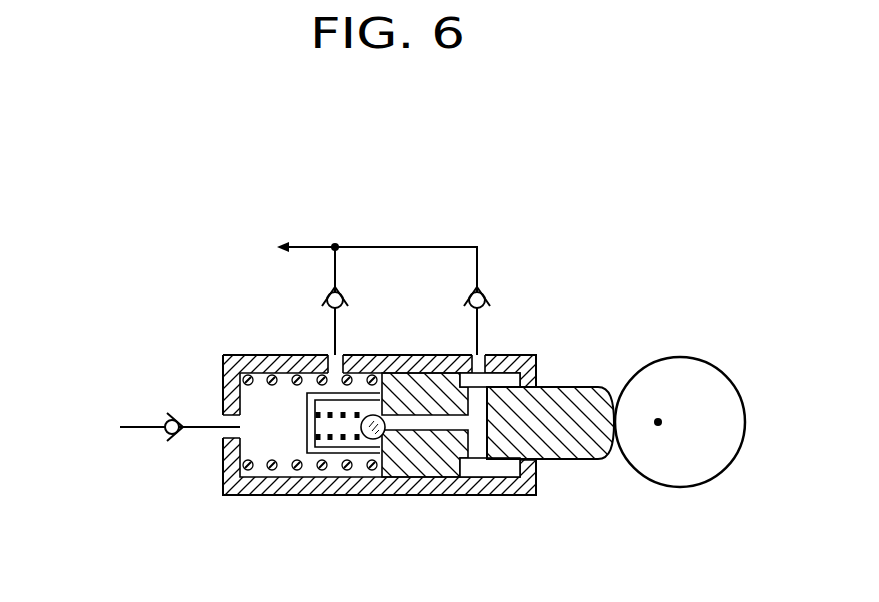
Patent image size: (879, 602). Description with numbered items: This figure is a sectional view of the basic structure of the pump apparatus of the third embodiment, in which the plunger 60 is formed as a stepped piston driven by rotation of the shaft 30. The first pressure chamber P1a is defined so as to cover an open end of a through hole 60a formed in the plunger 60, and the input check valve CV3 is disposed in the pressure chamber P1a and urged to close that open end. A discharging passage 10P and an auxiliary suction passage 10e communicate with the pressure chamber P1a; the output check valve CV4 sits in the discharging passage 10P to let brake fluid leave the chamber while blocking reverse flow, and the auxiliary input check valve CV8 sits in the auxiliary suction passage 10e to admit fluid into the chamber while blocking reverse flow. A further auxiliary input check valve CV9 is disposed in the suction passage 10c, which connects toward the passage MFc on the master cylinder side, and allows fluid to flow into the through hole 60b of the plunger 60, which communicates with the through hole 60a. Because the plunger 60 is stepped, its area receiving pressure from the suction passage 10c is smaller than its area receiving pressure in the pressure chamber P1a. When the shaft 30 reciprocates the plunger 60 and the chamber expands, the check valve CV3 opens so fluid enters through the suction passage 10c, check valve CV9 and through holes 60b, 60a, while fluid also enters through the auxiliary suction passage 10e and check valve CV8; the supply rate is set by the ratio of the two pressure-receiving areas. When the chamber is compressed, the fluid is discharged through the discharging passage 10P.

The suction passage 10c is at (410, 246).
The auxiliary suction passage 10e is at (337, 324).
The discharging passage 10P is at (198, 421).
The output check valve CV4 is at (180, 436).
The auxiliary input check valve CV8 is at (326, 300).
The auxiliary input check valve CV9 is at (484, 296).
The input check valve CV3 is at (413, 422).
The first pressure chamber P1a is at (263, 425).
The plunger 60 is at (562, 398).
The through hole 60a is at (430, 438).
The through hole 60b is at (477, 447).
The shaft 30 is at (690, 375).
The passage MFc is at (246, 241).